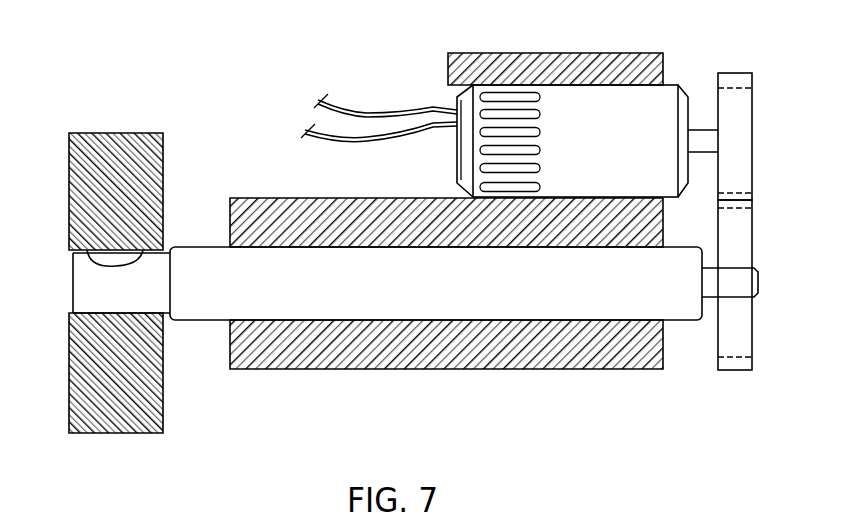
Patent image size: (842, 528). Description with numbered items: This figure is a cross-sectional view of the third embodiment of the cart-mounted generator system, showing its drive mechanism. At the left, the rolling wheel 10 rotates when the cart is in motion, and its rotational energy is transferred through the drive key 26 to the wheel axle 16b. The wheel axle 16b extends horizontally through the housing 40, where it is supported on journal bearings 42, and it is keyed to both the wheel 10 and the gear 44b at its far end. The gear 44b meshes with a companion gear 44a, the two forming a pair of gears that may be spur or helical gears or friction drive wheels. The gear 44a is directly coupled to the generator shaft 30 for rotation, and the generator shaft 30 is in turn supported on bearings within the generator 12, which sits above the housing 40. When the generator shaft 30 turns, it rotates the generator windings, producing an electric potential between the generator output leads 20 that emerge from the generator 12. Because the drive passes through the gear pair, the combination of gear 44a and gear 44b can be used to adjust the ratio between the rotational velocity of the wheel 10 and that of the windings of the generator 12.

The wheel 10 is at (78, 172).
The generator 12 is at (580, 97).
The wheel axle 16b is at (85, 292).
The generator output leads 20 is at (340, 95).
The drive key 26 is at (90, 248).
The generator shaft 30 is at (718, 142).
The housing 40 is at (457, 350).
The journal bearings 42 is at (297, 322).
The gear 44a is at (742, 163).
The gear 44b is at (742, 330).